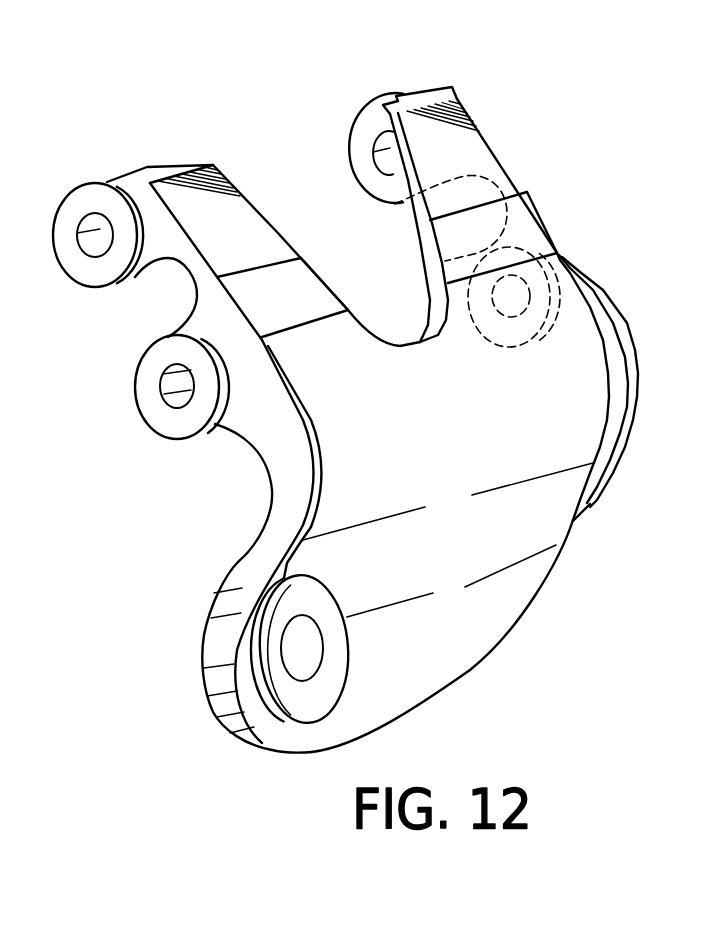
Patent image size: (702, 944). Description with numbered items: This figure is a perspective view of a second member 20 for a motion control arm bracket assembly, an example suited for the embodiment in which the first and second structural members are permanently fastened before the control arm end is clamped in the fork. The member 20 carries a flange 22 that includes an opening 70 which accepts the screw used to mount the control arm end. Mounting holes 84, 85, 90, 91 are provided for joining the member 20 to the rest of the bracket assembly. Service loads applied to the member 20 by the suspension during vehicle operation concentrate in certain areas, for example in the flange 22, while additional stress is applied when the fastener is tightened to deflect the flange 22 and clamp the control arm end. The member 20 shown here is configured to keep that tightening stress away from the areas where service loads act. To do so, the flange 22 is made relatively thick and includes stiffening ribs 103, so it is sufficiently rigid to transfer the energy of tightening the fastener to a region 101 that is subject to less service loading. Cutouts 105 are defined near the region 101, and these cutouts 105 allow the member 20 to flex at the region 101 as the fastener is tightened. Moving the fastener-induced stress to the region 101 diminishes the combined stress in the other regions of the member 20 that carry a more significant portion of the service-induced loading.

The second member 20 is at (267, 108).
The flange 22 is at (447, 633).
The opening 70 is at (300, 647).
The mounting hole 84 is at (172, 397).
The mounting hole 85 is at (88, 227).
The mounting hole 90 is at (528, 290).
The mounting hole 91 is at (387, 148).
The region 101 is at (227, 237).
The stiffening ribs 103 is at (616, 335).
The cutouts 105 is at (190, 283).